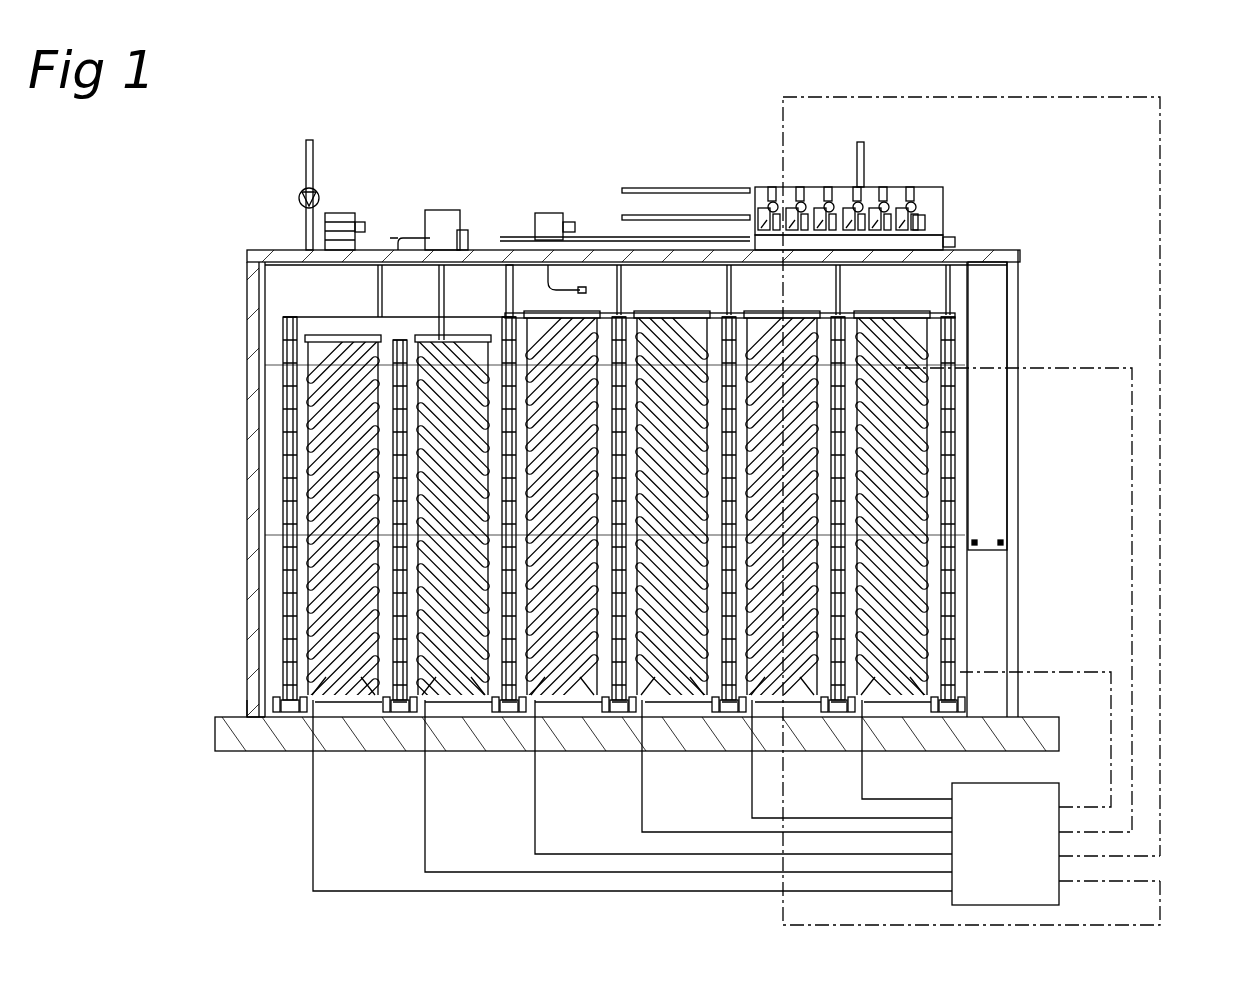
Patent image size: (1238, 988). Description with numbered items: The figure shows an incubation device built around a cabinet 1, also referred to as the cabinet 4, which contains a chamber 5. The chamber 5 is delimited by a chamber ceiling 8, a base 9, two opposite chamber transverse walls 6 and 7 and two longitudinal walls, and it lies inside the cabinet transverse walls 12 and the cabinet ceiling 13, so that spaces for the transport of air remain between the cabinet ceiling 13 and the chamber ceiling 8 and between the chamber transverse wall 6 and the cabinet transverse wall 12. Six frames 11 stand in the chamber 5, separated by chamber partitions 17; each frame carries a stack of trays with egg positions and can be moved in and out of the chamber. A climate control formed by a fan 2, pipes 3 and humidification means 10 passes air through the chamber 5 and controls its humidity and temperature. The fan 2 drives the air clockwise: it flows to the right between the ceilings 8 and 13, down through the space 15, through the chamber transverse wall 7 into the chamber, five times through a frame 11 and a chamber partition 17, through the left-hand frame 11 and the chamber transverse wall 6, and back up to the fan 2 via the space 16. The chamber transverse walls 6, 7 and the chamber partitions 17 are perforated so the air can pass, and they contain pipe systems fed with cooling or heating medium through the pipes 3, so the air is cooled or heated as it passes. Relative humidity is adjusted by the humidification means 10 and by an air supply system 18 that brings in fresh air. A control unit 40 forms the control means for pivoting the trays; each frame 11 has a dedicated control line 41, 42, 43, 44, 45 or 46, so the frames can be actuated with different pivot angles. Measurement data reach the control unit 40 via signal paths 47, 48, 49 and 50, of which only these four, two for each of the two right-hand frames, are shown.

The cabinet 1 is at (320, 140).
The fan 2 is at (350, 215).
The pipes 3 is at (378, 266).
The cabinet 4 is at (250, 688).
The chamber 5 is at (352, 703).
The chamber transverse wall 6 is at (285, 678).
The chamber transverse wall 7 is at (955, 506).
The chamber ceiling 8 is at (698, 318).
The base 9 is at (460, 716).
The humidification means 10 is at (440, 266).
The frame 11 is at (773, 336).
The cabinet transverse wall 12 is at (250, 408).
The cabinet ceiling 13 is at (602, 262).
The space 15 is at (960, 582).
The space 16 is at (272, 582).
The chamber partition 17 is at (508, 350).
The air supply system 18 is at (300, 202).
The control unit 40 is at (1052, 903).
The control line 41 is at (893, 800).
The control line 42 is at (752, 818).
The control line 43 is at (660, 834).
The control line 44 is at (550, 855).
The control line 45 is at (440, 873).
The control line 46 is at (313, 892).
The signal path 47 is at (1160, 923).
The signal path 48 is at (1160, 833).
The signal path 49 is at (1132, 775).
The signal path 50 is at (1111, 717).